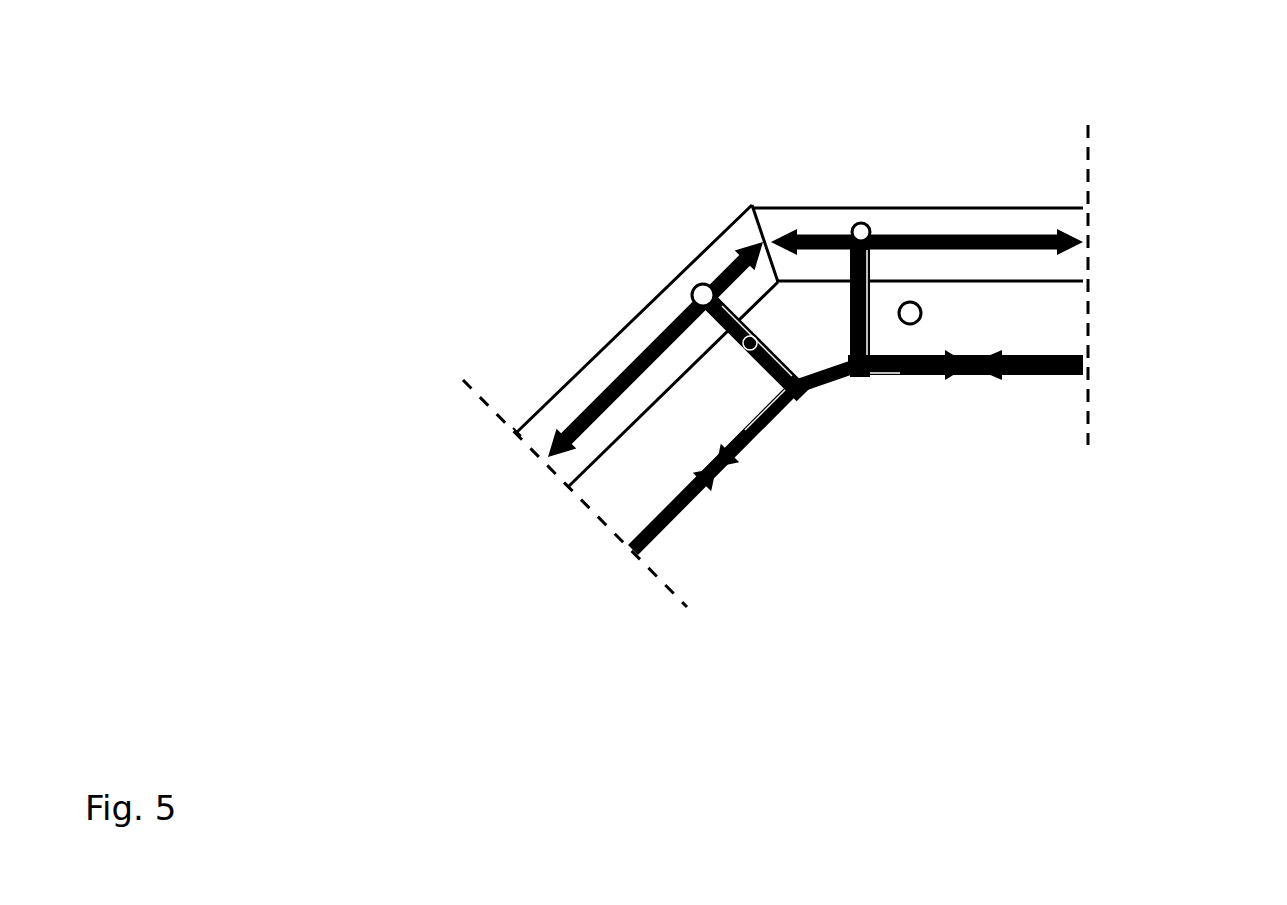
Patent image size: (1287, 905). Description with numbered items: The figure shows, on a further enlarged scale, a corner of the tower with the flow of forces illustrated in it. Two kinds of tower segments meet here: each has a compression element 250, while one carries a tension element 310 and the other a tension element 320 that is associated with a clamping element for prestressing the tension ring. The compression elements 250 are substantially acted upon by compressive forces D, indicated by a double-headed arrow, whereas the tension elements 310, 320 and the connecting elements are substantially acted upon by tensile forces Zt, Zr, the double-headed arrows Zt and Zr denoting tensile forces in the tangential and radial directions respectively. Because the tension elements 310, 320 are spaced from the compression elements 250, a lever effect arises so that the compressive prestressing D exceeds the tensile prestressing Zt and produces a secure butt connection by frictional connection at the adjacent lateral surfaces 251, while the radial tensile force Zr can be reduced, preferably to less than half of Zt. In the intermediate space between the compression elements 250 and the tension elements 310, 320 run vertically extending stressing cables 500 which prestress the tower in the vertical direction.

The compression element 250 is at (568, 405).
The lateral surface 251 is at (710, 163).
The compression force D is at (612, 392).
The tangential tensile force Zt is at (1040, 373).
The radial tensile force Zr is at (850, 290).
The tension element 310 is at (972, 374).
The tension element 320 is at (718, 472).
The stressing cable 500 is at (912, 311).